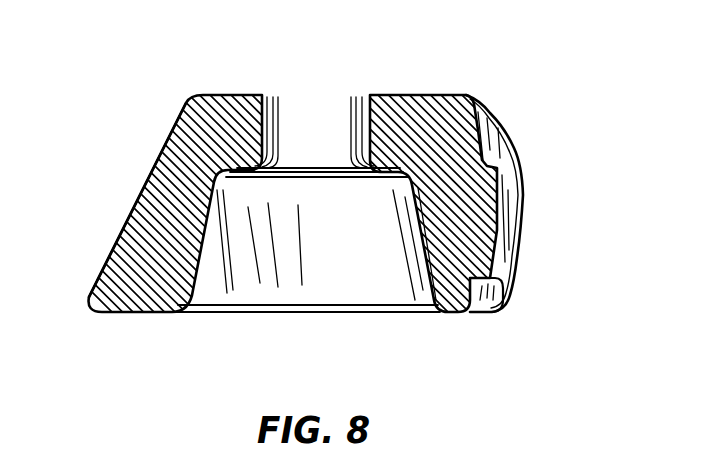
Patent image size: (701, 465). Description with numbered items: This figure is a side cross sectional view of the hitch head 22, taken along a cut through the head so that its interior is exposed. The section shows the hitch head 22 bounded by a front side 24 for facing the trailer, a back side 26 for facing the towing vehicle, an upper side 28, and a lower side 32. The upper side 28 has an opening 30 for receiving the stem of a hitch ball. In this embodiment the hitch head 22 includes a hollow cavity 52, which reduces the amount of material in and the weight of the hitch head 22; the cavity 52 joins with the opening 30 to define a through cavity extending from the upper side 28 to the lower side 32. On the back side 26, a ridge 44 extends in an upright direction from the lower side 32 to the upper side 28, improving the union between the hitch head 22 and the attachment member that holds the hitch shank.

The hitch head 22 is at (166, 140).
The front side 24 is at (138, 207).
The back side 26 is at (518, 237).
The upper side 28 is at (414, 95).
The opening 30 is at (282, 100).
The lower side 32 is at (424, 312).
The ridge 44 is at (519, 180).
The hollow cavity 52 is at (196, 280).